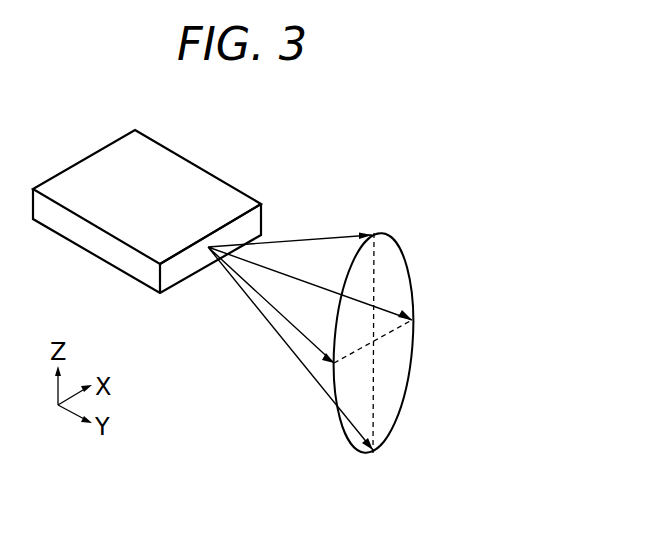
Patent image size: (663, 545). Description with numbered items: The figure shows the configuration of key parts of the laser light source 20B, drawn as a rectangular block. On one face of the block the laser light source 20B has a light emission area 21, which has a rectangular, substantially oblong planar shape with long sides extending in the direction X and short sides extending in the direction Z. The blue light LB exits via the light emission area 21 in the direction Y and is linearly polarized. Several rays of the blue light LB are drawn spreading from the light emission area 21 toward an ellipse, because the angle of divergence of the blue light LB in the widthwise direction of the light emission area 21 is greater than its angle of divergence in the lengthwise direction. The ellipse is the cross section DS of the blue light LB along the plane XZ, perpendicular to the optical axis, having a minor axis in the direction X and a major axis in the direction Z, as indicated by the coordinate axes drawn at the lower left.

The laser light source 20B is at (163, 173).
The light emission area 21 is at (187, 265).
The blue light LB is at (322, 237).
The cross section DS is at (410, 370).